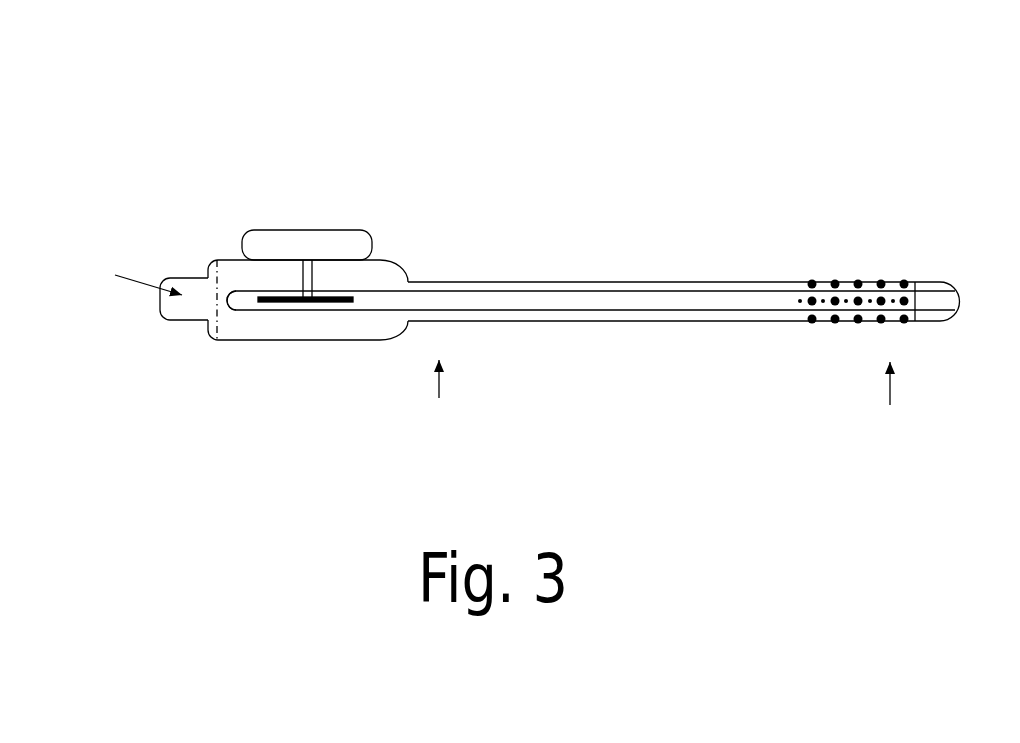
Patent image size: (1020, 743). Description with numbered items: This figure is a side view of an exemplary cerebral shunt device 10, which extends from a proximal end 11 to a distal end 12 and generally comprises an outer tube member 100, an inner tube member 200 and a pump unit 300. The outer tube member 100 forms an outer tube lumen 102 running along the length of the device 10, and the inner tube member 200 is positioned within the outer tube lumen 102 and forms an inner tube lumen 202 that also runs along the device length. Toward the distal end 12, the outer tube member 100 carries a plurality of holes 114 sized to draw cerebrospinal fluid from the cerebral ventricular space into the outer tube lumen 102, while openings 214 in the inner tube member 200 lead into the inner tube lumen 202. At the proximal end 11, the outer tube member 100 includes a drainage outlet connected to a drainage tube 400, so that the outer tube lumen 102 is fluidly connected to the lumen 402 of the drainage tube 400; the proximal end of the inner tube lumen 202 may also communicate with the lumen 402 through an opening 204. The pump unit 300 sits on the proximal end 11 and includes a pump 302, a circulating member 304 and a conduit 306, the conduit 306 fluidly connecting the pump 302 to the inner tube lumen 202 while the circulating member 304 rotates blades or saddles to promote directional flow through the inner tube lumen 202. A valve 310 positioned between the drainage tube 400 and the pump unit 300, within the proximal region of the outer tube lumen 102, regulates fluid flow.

The cerebral shunt device 10 is at (577, 105).
The proximal end 11 is at (440, 400).
The distal end 12 is at (890, 405).
The outer tube member 100 is at (585, 282).
The outer tube lumen 102 is at (641, 283).
The holes 114 is at (813, 283).
The inner tube member 200 is at (708, 291).
The inner tube lumen 202 is at (756, 304).
The opening 204 is at (222, 301).
The openings 214 is at (874, 300).
The pump unit 300 is at (197, 188).
The pump 302 is at (325, 230).
The circulating member 304 is at (272, 302).
The conduit 306 is at (313, 282).
The valve 310 is at (215, 260).
The drainage tube 400 is at (177, 318).
The lumen of drainage tube 402 is at (122, 275).